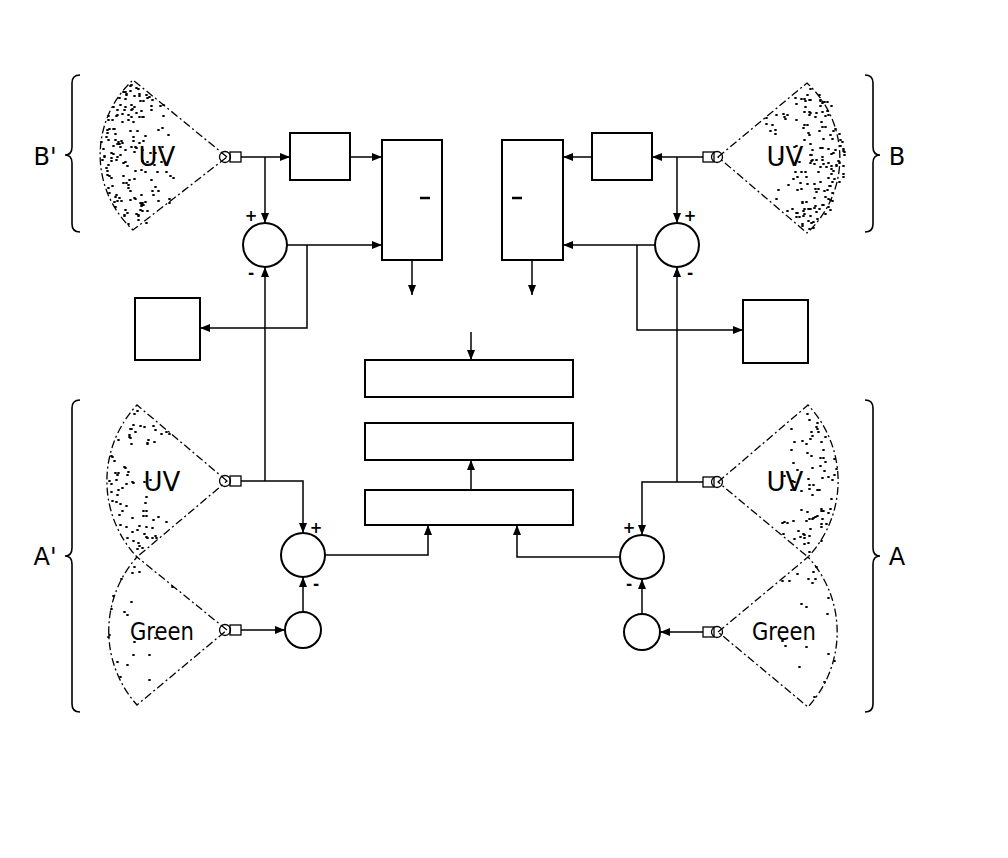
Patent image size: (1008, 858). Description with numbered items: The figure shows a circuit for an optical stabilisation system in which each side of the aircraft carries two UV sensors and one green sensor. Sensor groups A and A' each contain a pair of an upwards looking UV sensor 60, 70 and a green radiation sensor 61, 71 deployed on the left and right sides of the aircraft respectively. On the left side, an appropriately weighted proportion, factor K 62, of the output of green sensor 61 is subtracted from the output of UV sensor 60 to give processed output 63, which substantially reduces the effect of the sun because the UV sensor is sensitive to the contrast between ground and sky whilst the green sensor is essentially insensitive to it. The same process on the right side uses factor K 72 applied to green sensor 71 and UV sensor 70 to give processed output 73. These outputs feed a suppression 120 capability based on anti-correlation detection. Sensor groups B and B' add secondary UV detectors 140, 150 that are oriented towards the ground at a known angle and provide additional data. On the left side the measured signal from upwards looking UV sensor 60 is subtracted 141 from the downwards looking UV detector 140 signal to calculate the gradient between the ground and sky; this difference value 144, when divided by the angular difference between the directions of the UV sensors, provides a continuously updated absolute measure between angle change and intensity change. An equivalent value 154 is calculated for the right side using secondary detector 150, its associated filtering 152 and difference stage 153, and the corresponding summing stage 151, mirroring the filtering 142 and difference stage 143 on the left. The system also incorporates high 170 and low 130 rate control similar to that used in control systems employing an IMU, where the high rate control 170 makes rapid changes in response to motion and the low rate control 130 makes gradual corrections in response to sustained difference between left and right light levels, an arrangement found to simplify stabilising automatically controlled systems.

The secondary UV detector 150 is at (233, 150).
The high pass filter (B' side) 152 is at (318, 133).
The A-B difference block (B' side) 153 is at (407, 140).
The A-B difference block (B side) 143 is at (537, 140).
The high pass filter (B side) 142 is at (624, 133).
The secondary UV detector 140 is at (708, 150).
The summing junction (B' side) 151 is at (243, 243).
The subtraction 141 is at (699, 243).
The equivalent value 154 is at (135, 330).
The difference value 144 is at (553, 549).
The high rate control 170 is at (365, 378).
The low rate control 130 is at (365, 442).
The suppression 120 is at (472, 525).
The UV sensor 70 is at (232, 475).
The green wavelength sensor 71 is at (235, 640).
The processed output 73 is at (320, 570).
The weighting factor K 72 is at (318, 642).
The UV sensor 60 is at (708, 476).
The green wavelength sensor 61 is at (710, 640).
The processed output 63 is at (622, 570).
The weighting factor K 62 is at (628, 642).